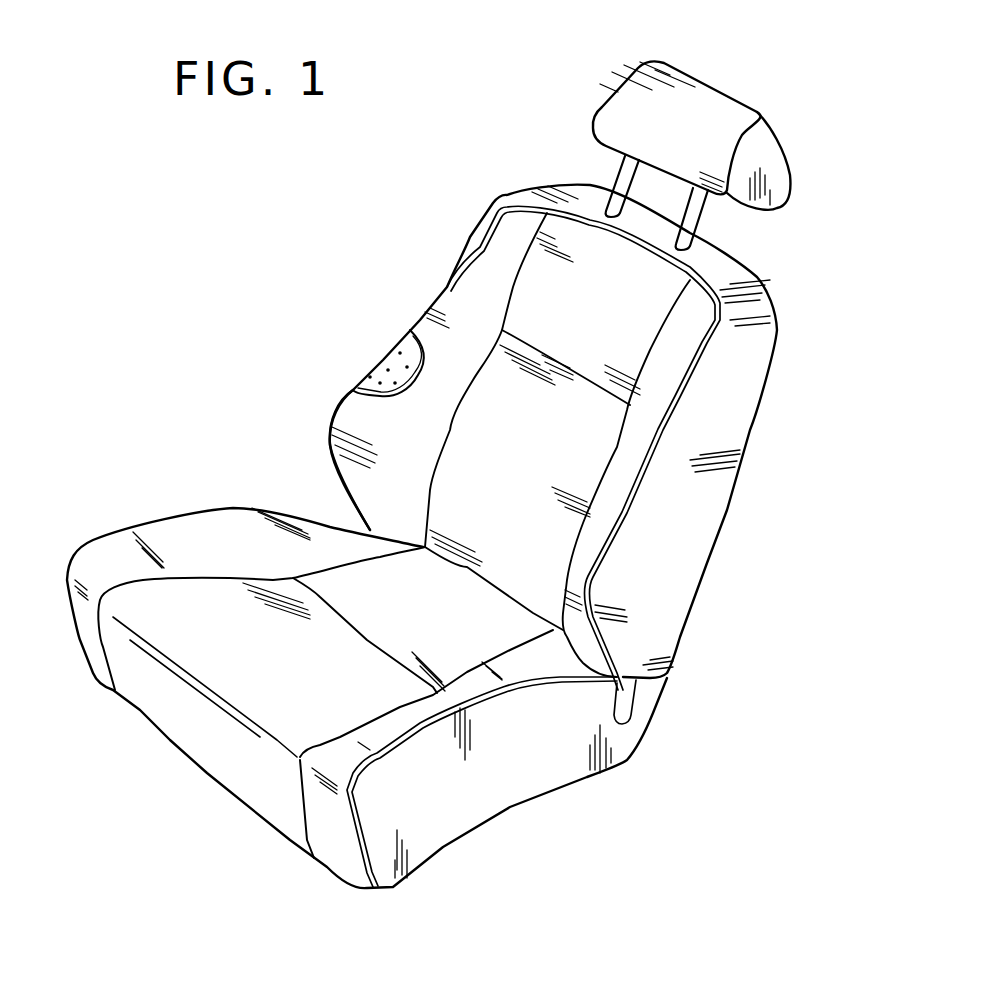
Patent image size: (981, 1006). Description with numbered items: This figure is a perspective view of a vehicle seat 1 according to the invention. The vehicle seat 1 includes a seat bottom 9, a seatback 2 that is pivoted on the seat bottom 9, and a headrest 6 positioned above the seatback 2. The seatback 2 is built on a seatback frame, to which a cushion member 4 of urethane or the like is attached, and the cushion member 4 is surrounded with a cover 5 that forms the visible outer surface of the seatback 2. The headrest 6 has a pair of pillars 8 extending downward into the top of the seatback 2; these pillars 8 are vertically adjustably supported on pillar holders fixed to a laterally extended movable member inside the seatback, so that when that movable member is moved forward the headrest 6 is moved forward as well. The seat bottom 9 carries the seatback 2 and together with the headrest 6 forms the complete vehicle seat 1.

The vehicle seat 1 is at (733, 556).
The seatback 2 is at (743, 499).
The cushion member 4 is at (397, 370).
The cover 5 is at (360, 410).
The headrest 6 is at (737, 85).
The pillars 8 is at (703, 220).
The seat bottom 9 is at (260, 700).